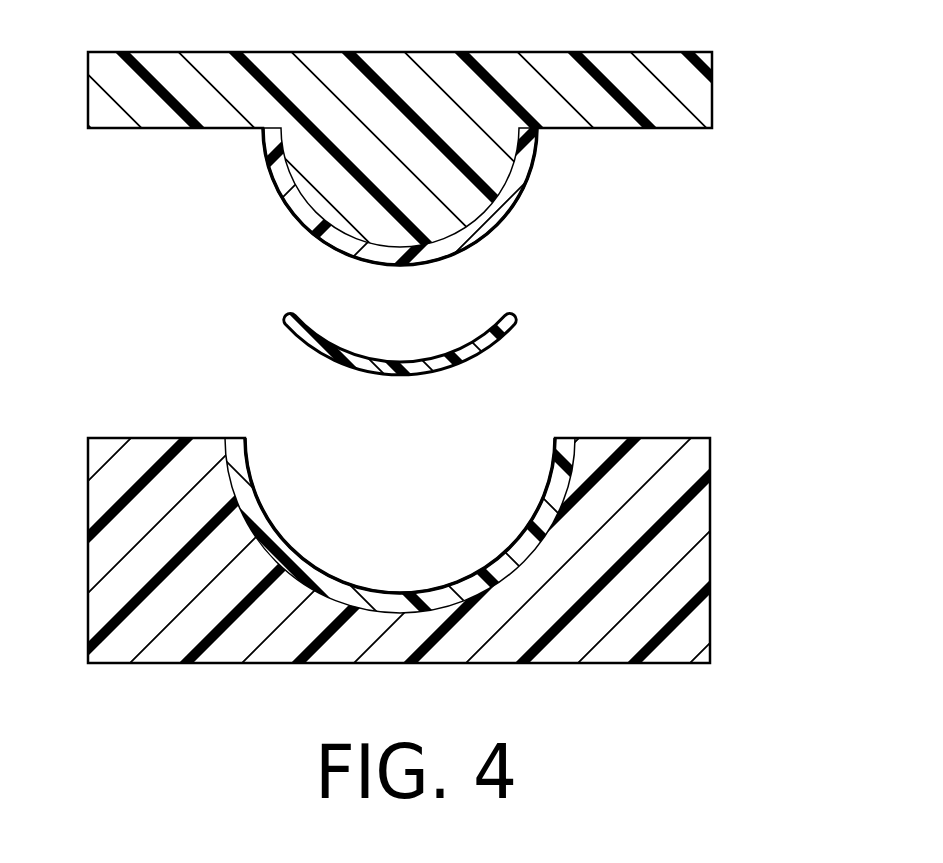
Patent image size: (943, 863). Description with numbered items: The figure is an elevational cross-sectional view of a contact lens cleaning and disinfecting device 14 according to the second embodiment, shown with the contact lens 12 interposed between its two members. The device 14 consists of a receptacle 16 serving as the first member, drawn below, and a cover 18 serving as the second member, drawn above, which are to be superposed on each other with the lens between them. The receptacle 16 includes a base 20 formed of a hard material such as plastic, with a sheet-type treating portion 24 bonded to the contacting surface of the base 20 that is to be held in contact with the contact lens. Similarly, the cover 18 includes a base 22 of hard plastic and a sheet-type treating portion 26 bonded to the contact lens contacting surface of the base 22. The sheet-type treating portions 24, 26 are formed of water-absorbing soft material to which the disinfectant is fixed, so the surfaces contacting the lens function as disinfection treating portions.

The workpiece blank 12 is at (290, 335).
The contact lens cleaning and disinfecting device 14 is at (466, 351).
The receptacle 16 is at (466, 532).
The cover 18 is at (457, 163).
The base 20 is at (102, 605).
The base 22 is at (102, 107).
The sheet-type treating portion 24 is at (277, 538).
The sheet-type treating portion 26 is at (288, 192).